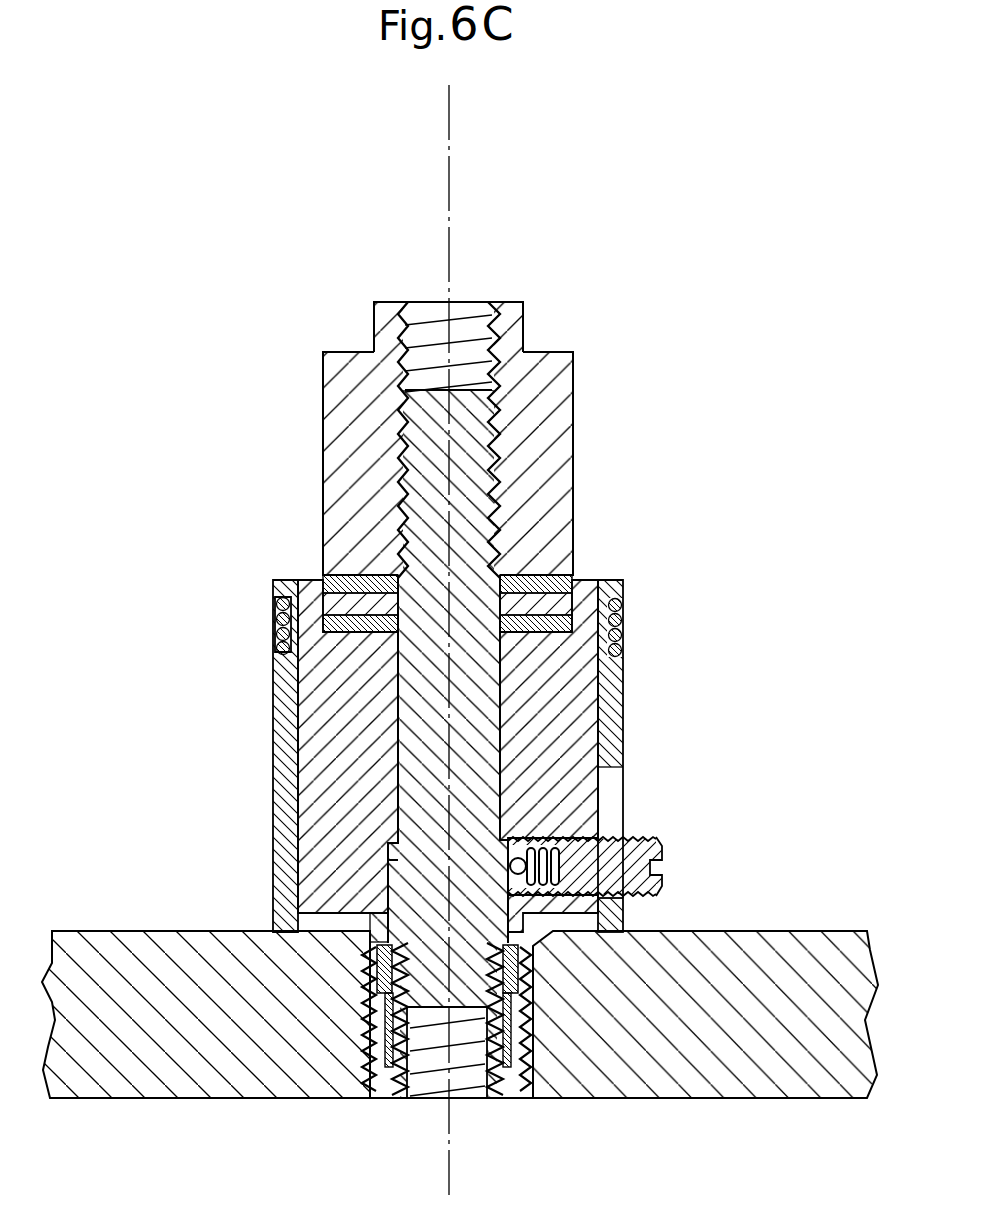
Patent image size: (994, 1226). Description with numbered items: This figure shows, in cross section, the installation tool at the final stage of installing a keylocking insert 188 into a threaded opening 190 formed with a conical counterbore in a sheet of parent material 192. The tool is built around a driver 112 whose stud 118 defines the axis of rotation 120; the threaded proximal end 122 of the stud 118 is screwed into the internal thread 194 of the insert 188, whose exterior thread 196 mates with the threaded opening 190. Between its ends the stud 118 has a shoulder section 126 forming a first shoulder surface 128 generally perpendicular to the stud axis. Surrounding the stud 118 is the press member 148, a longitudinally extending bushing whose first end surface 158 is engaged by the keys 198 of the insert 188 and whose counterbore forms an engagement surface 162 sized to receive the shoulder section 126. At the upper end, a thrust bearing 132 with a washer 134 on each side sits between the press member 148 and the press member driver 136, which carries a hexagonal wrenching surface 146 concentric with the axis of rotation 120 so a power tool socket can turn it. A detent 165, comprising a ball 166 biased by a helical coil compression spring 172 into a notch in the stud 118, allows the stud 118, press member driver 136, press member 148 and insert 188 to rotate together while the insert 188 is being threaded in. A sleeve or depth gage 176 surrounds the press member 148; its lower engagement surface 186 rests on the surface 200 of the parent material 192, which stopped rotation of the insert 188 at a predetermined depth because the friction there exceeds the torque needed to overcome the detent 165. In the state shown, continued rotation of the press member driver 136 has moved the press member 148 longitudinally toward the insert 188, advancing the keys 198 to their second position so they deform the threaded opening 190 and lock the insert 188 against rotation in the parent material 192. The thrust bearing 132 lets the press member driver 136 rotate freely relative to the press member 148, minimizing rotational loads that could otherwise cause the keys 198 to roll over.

The driver 112 is at (438, 385).
The stud 118 is at (429, 390).
The axis of rotation 120 is at (449, 116).
The threaded proximal end 122 is at (386, 1025).
The shoulder section 126 is at (388, 876).
The first shoulder surface 128 is at (500, 838).
The thrust bearing 132 is at (598, 604).
The washer 134 is at (585, 580).
The press member driver 136 is at (352, 350).
The wrenching surface 146 is at (523, 322).
The press member 148 is at (300, 793).
The first end surface 158 is at (378, 962).
The engagement surface 162 is at (388, 849).
The detent 165 is at (672, 869).
The ball 166 is at (513, 845).
The helical coil compression spring 172 is at (543, 845).
The depth gage 176 is at (273, 752).
The lower engagement surface 186 is at (612, 920).
The insert 188 is at (552, 1072).
The threaded opening 190 is at (523, 1078).
The parent material 192 is at (807, 1099).
The internal thread 194 is at (422, 1082).
The exterior thread 196 is at (370, 1069).
The keys 198 is at (377, 963).
The surface 200 is at (822, 931).